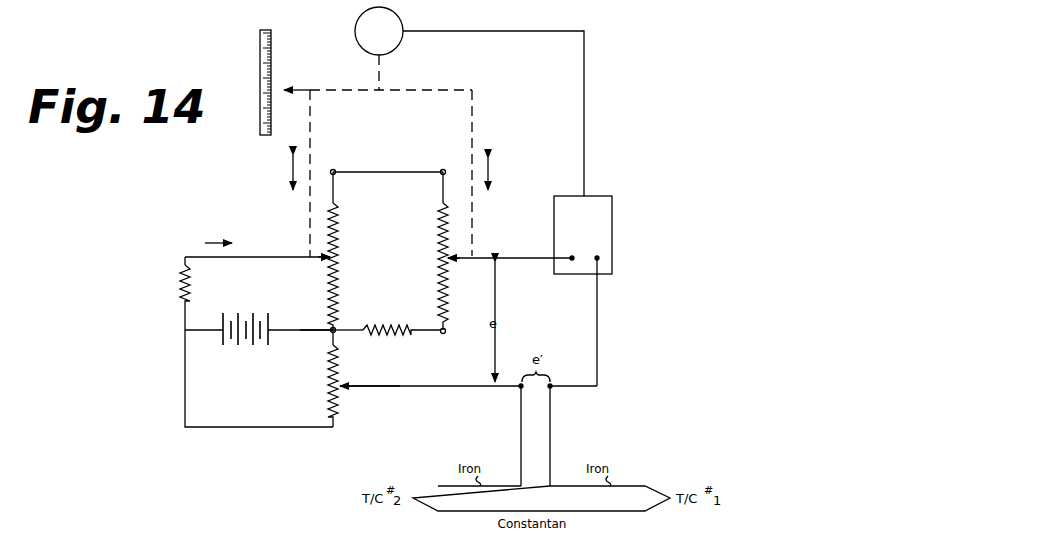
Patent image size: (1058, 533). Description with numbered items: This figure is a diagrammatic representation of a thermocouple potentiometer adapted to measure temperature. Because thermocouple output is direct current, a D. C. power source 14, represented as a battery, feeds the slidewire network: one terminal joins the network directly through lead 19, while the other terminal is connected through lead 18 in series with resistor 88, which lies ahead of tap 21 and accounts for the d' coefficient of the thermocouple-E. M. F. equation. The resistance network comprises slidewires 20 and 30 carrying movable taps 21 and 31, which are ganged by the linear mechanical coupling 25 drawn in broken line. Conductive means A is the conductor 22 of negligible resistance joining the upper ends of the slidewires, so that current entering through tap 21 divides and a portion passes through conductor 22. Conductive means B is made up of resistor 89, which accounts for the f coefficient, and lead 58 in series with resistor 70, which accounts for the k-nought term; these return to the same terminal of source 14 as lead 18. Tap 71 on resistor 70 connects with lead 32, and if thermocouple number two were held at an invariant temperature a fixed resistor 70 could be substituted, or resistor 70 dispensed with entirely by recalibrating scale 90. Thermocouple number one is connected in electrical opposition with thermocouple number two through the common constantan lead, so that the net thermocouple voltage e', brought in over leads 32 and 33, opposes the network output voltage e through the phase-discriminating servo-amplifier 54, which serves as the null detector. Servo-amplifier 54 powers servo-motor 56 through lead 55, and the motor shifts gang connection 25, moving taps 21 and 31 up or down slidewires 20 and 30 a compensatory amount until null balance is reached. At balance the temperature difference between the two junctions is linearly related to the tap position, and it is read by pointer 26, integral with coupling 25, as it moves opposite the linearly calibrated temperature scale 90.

The D. C. power source 14 is at (233, 350).
The lead 18 is at (260, 258).
The lead 19 is at (309, 336).
The slidewire 20 is at (339, 247).
The movable tap 21 is at (325, 262).
The conductor 22 is at (372, 170).
The mechanical coupling 25 is at (432, 92).
The pointer 26 is at (287, 81).
The slidewire 30 is at (440, 257).
The movable tap 31 is at (455, 262).
The lead 32 is at (440, 390).
The lead 33 is at (515, 257).
The servo-amplifier 54 is at (612, 218).
The lead 55 is at (584, 112).
The servo-motor 56 is at (405, 19).
The lead 58 is at (215, 427).
The resistor 70 is at (326, 388).
The tap 71 is at (346, 383).
The resistor 88 is at (180, 286).
The resistor 89 is at (393, 335).
The temperature scale 90 is at (258, 68).